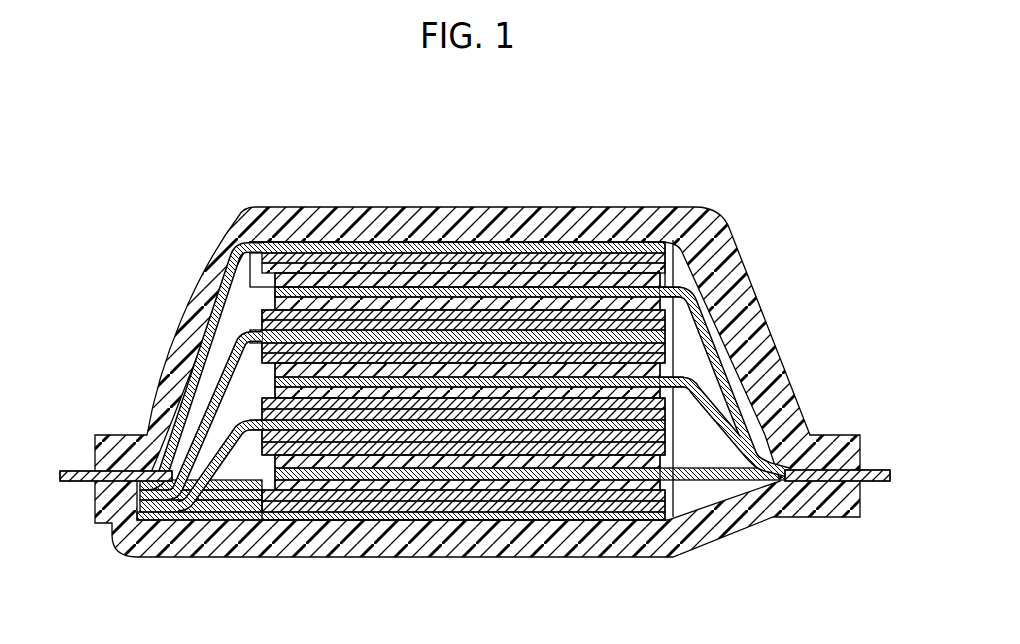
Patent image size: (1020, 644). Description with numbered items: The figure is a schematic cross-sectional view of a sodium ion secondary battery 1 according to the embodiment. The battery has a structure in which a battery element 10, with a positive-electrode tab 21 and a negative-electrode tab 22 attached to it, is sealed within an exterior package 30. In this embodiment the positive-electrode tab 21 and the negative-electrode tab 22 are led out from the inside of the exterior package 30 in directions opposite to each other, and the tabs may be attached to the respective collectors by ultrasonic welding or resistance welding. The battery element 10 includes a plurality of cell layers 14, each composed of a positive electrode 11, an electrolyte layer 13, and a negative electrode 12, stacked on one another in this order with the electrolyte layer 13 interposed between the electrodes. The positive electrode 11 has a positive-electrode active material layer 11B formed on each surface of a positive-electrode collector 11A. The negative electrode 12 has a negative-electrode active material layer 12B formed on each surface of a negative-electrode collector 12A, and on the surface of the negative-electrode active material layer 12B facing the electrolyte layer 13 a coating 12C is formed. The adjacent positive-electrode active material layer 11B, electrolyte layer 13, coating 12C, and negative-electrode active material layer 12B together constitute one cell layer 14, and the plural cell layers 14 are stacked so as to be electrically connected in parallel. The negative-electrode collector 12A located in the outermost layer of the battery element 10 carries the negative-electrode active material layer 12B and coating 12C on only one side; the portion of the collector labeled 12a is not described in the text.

The sodium ion secondary battery 1 is at (178, 162).
The battery element 10 is at (673, 418).
The positive electrode 11 is at (523, 150).
The positive-electrode collector 11A is at (468, 295).
The positive-electrode active material layer 11B is at (378, 300).
The negative electrode 12 is at (745, 150).
The negative-electrode collector 12A is at (612, 340).
The negative-electrode active material layer 12B is at (276, 250).
The coating 12C is at (310, 270).
The current collector extension portion 12a is at (224, 303).
The electrolyte layer 13 is at (344, 282).
The cell layer 14 is at (397, 150).
The positive-electrode tab 21 is at (870, 470).
The negative-electrode tab 22 is at (90, 472).
The exterior package 30 is at (840, 433).